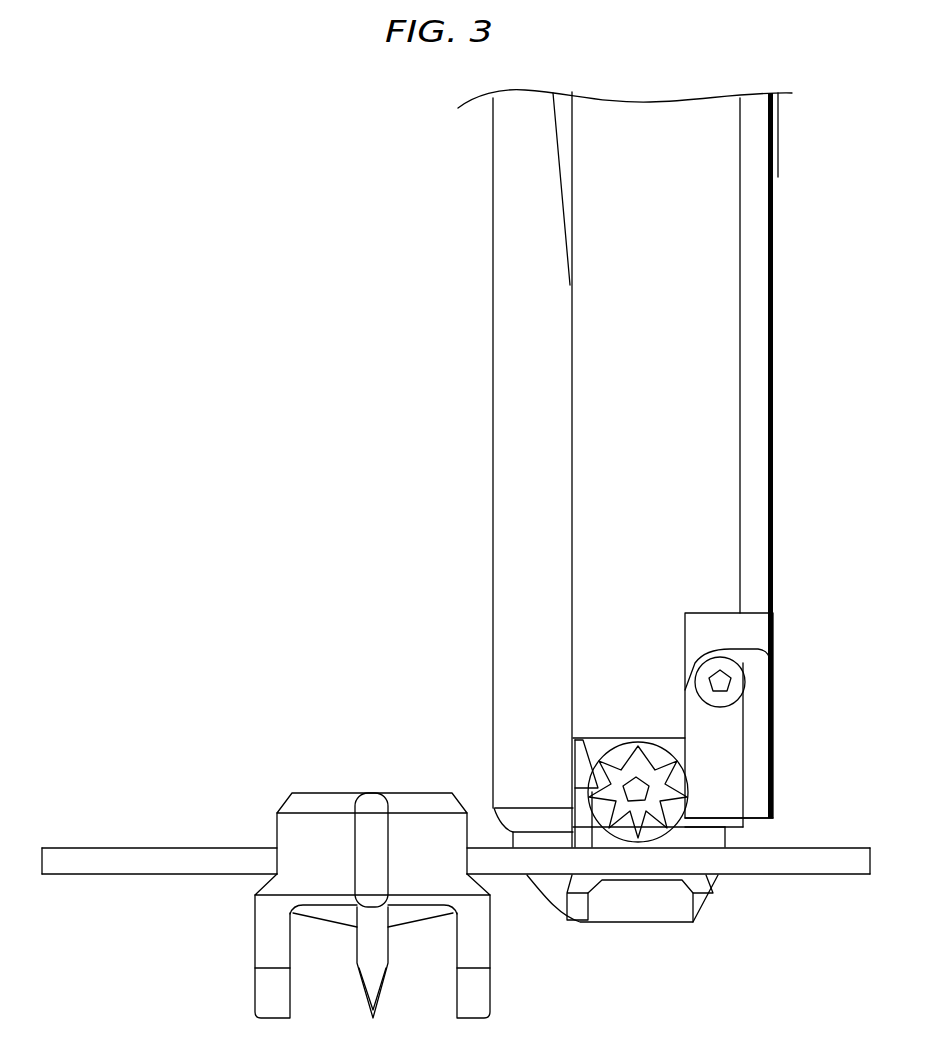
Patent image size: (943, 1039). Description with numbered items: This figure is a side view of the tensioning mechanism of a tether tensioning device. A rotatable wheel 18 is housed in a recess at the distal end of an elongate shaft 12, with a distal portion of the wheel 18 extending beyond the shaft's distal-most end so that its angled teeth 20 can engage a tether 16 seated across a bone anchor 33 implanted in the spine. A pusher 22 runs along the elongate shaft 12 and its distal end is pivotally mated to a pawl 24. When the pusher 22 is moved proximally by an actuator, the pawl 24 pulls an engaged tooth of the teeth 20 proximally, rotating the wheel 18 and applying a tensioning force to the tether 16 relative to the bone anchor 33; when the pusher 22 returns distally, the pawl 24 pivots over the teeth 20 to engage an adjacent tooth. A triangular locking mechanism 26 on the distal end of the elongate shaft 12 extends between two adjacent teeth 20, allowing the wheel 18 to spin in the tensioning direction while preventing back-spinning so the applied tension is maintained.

The elongate shaft 12 is at (493, 345).
The tether 16 is at (93, 848).
The rotatable wheel 18 is at (642, 772).
The teeth 20 is at (612, 818).
The pusher 22 is at (758, 697).
The pawl 24 is at (685, 799).
The locking mechanism 26 is at (585, 781).
The bone anchor 33 is at (492, 978).